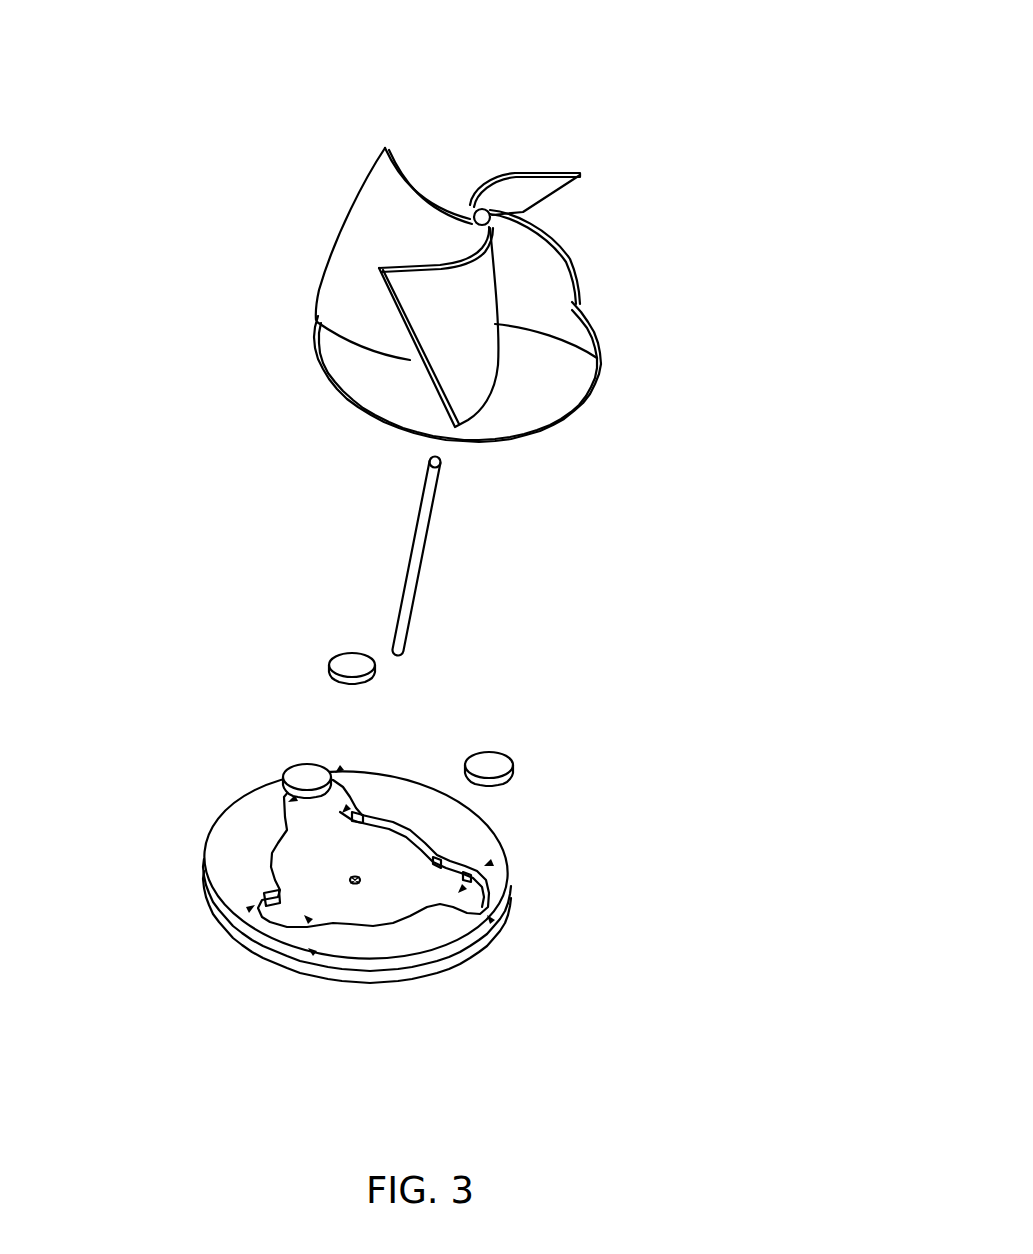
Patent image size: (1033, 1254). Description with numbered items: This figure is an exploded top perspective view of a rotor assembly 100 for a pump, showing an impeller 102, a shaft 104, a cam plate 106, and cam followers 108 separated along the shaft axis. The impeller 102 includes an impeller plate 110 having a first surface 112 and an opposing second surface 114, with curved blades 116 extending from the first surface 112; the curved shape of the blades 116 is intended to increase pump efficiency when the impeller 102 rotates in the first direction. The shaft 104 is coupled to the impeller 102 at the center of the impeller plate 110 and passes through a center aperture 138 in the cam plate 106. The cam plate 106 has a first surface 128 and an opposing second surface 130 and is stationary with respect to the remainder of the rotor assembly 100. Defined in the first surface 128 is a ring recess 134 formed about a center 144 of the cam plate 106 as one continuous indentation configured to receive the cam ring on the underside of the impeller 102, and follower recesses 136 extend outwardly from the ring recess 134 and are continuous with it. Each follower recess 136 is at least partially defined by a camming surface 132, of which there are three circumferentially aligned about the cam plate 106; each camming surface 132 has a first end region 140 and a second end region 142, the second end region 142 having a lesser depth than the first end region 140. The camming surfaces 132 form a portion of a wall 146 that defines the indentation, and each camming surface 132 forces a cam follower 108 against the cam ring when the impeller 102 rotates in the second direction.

The rotor assembly 100 is at (672, 54).
The impeller 102 is at (533, 291).
The shaft 104 is at (415, 560).
The cam plate 106 is at (408, 882).
The cam follower 108 is at (350, 665).
The impeller plate 110 is at (583, 412).
The first surface 112 is at (557, 385).
The second surface 114 is at (535, 428).
The blade 116 is at (518, 197).
The first surface 128 is at (495, 850).
The second surface 130 is at (385, 970).
The camming surface 132 is at (345, 808).
The ring recess 134 is at (310, 851).
The follower recess 136 is at (362, 816).
The center aperture 138 is at (358, 887).
The first end region 140 is at (337, 768).
The second end region 142 is at (286, 802).
The center 144 is at (400, 826).
The wall 146 is at (467, 845).